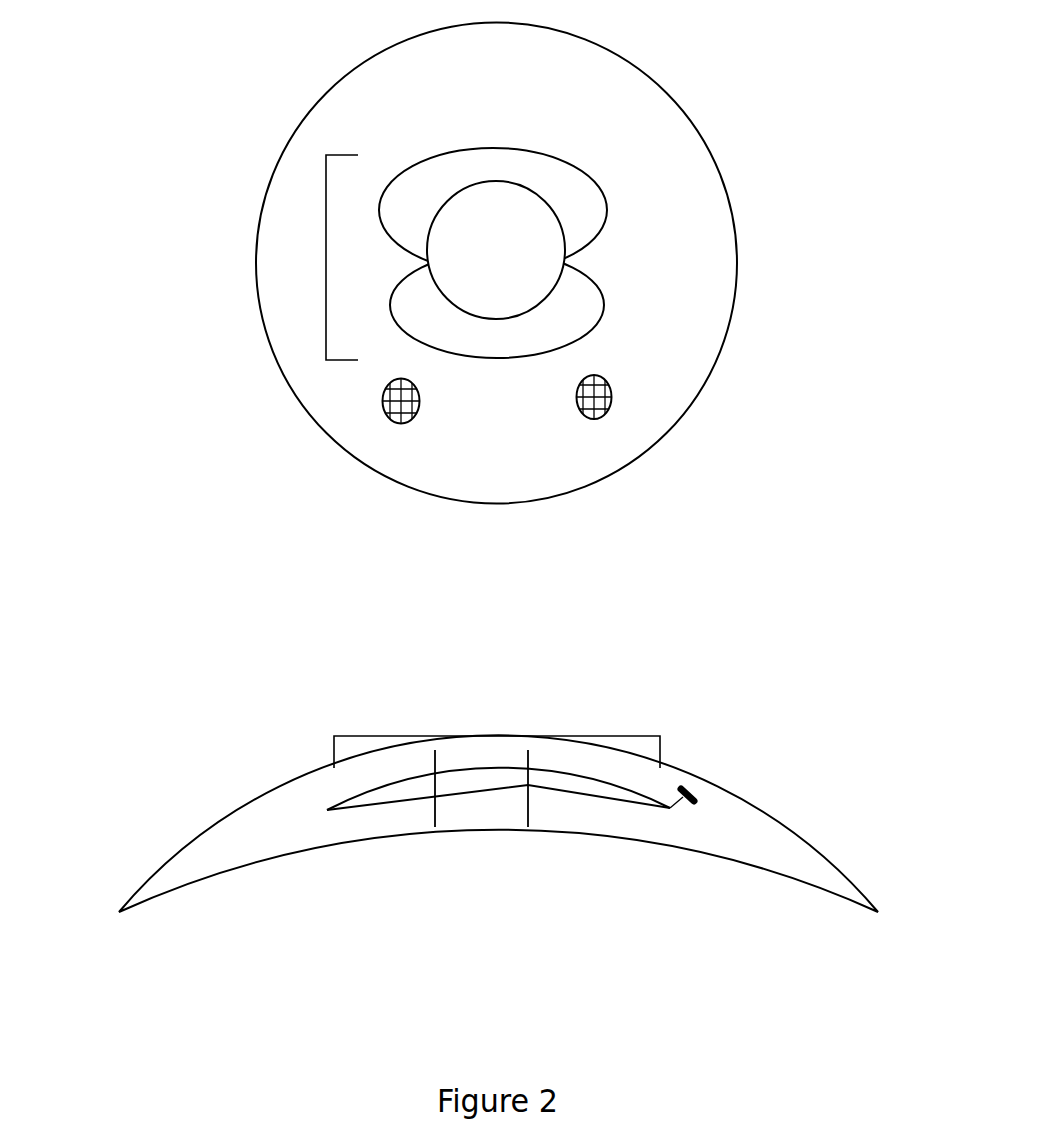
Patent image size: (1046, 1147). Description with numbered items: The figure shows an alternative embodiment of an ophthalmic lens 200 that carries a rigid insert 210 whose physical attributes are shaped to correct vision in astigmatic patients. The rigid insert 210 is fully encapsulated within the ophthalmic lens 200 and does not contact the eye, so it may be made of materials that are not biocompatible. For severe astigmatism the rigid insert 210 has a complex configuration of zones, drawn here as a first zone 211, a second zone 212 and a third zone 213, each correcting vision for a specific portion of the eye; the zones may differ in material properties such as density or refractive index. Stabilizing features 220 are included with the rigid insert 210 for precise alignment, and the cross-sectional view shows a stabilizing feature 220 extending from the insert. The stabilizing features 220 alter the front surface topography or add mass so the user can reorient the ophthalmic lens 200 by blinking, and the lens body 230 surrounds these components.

The ophthalmic lens 200 is at (70, 532).
The rigid insert 210 is at (326, 267).
The first zone 211 is at (527, 170).
The second zone 212 is at (557, 327).
The third zone 213 is at (513, 253).
The stabilizing feature 220 is at (613, 399).
The lens body 230 is at (411, 133).